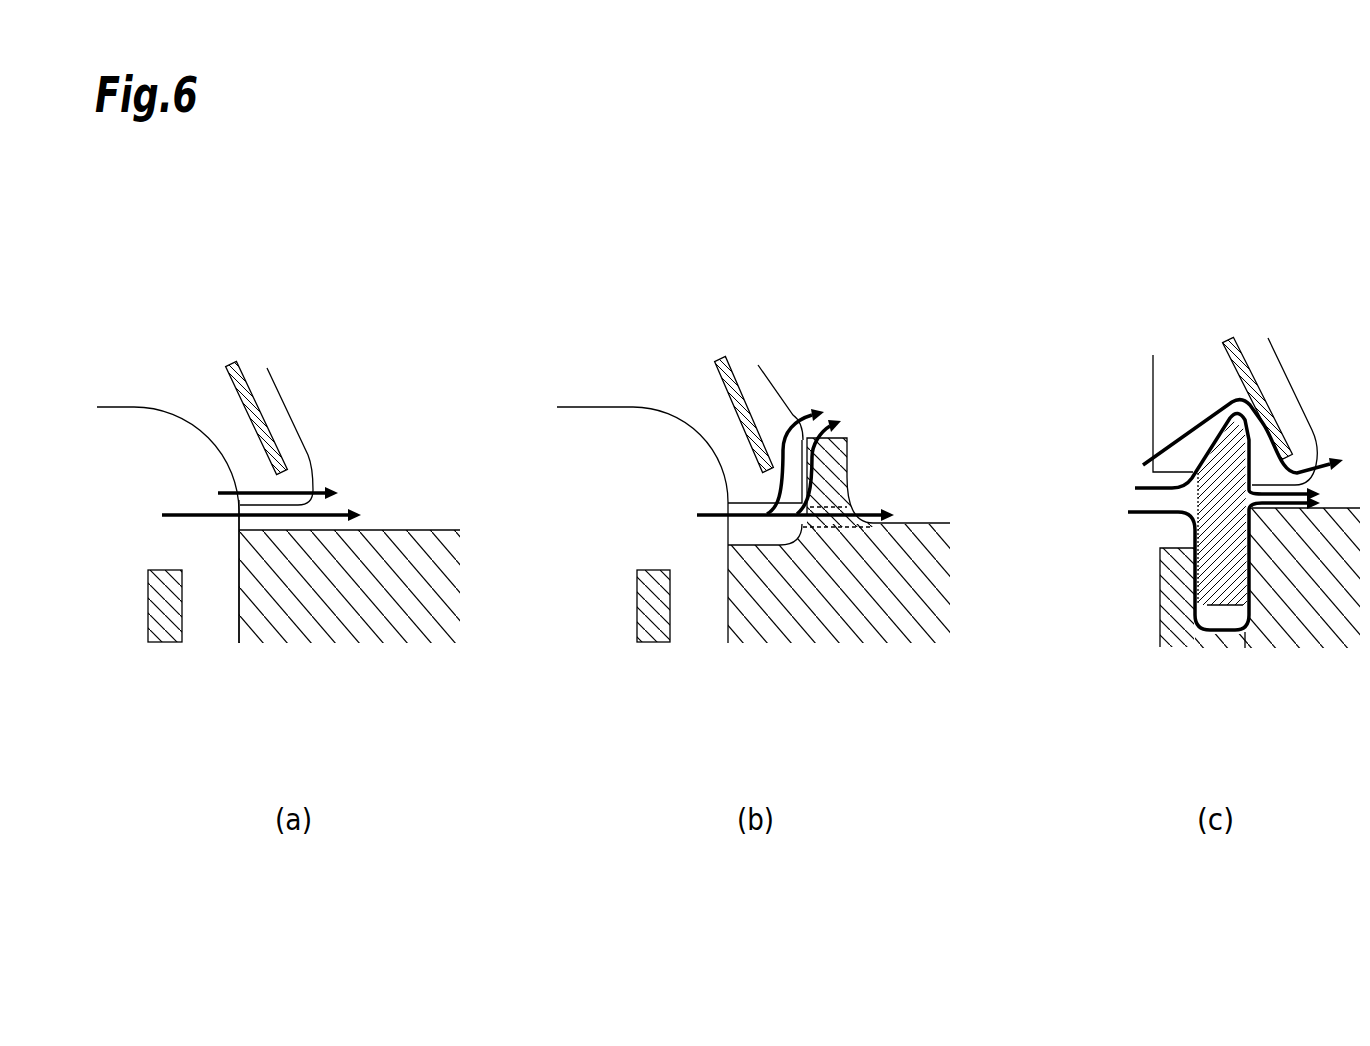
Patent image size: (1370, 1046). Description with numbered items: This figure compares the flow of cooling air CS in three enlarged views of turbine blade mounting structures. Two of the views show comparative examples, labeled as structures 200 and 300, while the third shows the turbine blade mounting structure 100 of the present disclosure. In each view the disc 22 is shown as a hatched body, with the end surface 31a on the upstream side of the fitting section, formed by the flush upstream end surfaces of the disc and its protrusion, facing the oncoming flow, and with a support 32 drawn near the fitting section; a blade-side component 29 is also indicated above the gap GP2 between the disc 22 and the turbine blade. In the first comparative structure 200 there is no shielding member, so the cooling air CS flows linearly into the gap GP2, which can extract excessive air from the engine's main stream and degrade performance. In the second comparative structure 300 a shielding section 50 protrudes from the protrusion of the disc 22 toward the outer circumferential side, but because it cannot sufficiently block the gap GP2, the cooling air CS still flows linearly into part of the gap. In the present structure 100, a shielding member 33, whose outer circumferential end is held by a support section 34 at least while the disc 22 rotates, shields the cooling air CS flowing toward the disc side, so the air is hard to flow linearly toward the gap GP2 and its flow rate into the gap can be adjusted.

The comparative structure 200 is at (177, 358).
The comparative structure 300 is at (629, 356).
The turbine blade mounting structure 100 is at (1124, 344).
The disc 22 is at (368, 613).
The blade 29 is at (260, 413).
The end surface on the upstream side of the fitting section 31a is at (240, 577).
The support 32 is at (143, 613).
The shielding member 33 is at (1185, 530).
The support section 34 is at (1134, 424).
The shielding section 50 is at (847, 467).
The cooling air CS is at (224, 488).
The gap GP2 is at (218, 527).